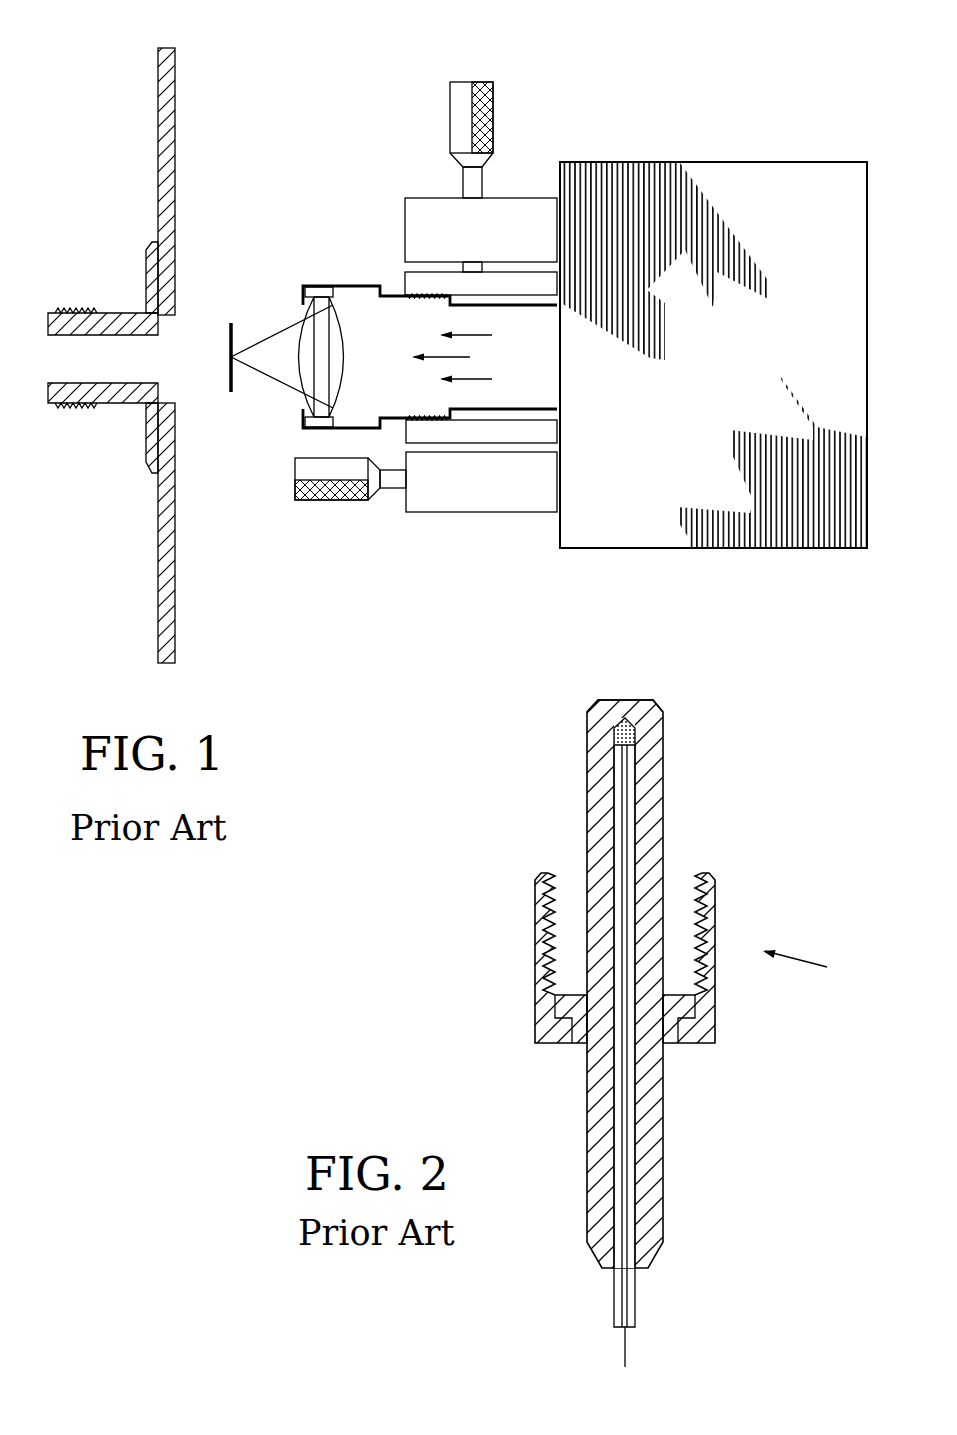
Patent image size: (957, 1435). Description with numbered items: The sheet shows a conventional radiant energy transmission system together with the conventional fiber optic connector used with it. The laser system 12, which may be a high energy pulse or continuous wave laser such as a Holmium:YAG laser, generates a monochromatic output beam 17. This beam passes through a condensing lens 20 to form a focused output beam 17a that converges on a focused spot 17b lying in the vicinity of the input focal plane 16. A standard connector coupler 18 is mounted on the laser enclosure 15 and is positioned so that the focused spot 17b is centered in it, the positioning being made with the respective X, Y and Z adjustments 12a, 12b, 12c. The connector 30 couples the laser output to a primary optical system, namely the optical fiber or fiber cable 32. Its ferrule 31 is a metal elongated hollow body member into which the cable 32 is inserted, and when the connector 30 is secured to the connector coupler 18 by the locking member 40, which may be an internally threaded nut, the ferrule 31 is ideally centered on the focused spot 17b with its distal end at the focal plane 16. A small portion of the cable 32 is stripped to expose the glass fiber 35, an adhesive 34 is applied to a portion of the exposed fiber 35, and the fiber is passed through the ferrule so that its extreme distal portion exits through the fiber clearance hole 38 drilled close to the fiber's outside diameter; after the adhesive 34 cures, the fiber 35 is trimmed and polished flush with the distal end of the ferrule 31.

In FIG. 1, the laser system 12 is at (682, 162).
In FIG. 1, the X adjustment 12a is at (480, 82).
In FIG. 1, the Y adjustment 12b is at (336, 502).
In FIG. 1, the Z adjustment 12c is at (398, 290).
In FIG. 1, the laser enclosure 15 is at (176, 101).
In FIG. 1, the input focal plane 16 is at (228, 340).
In FIG. 1, the output beam 17 is at (468, 367).
In FIG. 1, the focused output beam 17a is at (273, 350).
In FIG. 1, the focused spot 17b is at (236, 362).
In FIG. 1, the connector coupler 18 is at (146, 266).
In FIG. 1, the lens 20 is at (318, 292).
In FIG. 2, the connector 30 is at (815, 967).
In FIG. 2, the connector ferrule 31 is at (585, 717).
In FIG. 2, the optical fiber cable 32 is at (613, 1316).
In FIG. 2, the adhesive 34 is at (636, 740).
In FIG. 2, the exposed glass fiber 35 is at (628, 1348).
In FIG. 2, the fiber clearance hole 38 is at (653, 711).
In FIG. 2, the locking member 40 is at (533, 1027).